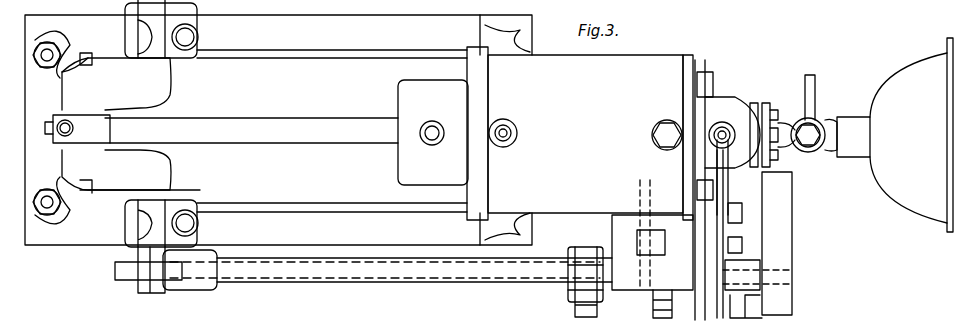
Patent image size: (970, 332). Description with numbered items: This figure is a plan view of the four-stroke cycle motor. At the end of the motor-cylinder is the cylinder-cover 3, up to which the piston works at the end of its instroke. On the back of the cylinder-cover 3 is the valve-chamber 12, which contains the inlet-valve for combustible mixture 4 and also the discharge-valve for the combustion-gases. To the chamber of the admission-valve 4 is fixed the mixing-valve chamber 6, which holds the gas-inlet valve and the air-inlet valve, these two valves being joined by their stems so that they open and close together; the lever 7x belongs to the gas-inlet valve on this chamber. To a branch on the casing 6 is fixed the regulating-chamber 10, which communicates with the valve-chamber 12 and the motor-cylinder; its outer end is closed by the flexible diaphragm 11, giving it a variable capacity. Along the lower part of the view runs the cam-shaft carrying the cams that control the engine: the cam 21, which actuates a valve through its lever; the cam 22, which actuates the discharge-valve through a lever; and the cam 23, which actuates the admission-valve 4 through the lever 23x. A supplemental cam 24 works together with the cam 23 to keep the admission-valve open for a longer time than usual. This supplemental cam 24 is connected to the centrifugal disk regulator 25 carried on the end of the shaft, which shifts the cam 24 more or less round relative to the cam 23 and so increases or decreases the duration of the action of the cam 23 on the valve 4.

The cylinder-cover 3 is at (693, 65).
The inlet-valve for combustible mixture 4 is at (724, 133).
The mixing-valve chamber 6 is at (815, 125).
The lever 7x is at (813, 90).
The regulating-chamber 10 is at (908, 138).
The flexible diaphragm 11 is at (948, 225).
The valve-chamber 12 is at (715, 100).
The cam 21 is at (580, 275).
The cam 22 is at (405, 270).
The cam 23 is at (740, 262).
The lever 23x is at (723, 192).
The supplemental cam 24 is at (757, 277).
The centrifugal disk regulator 25 is at (777, 243).